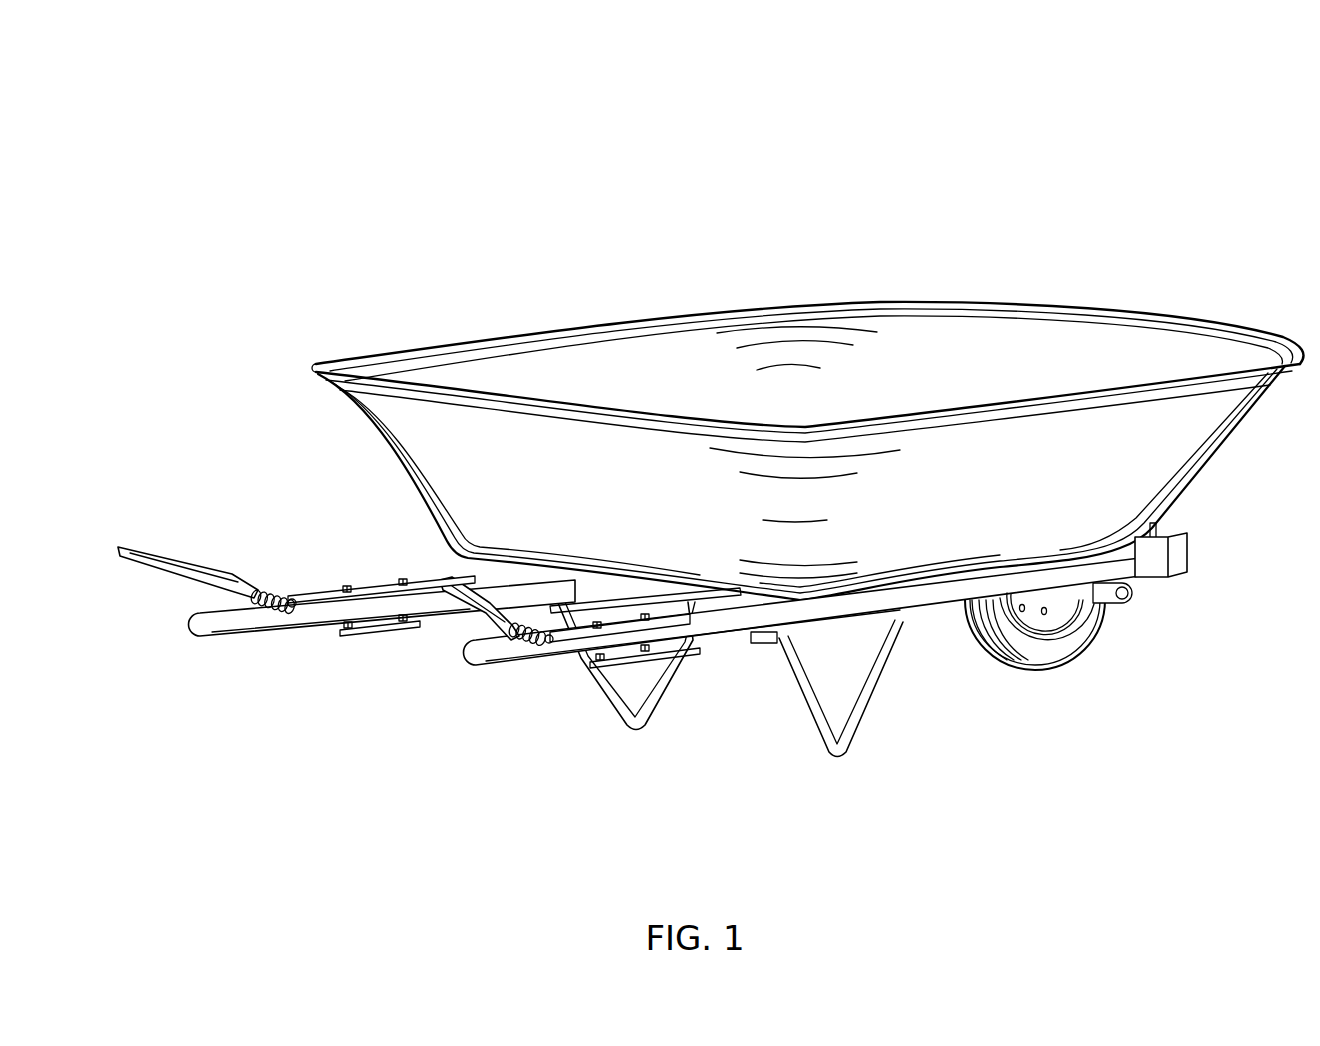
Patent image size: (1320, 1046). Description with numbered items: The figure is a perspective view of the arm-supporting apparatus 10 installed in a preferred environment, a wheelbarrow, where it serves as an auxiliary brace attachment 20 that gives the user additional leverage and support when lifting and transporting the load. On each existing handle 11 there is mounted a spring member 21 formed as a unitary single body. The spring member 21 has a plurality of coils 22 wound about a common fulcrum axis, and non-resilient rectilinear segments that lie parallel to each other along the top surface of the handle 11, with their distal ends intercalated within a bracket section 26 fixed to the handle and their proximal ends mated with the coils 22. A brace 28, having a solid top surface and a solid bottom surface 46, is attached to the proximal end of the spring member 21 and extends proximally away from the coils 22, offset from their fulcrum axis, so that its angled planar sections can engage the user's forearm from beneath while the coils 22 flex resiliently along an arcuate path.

The arm-supporting apparatus 10 is at (276, 190).
The existing handle 11 is at (242, 627).
The auxiliary brace attachment 20 is at (247, 465).
The spring member 21 is at (270, 582).
The coils 22 is at (292, 590).
The bracket section 26 is at (354, 575).
The brace 28 is at (184, 551).
The bottom surface 46 is at (168, 573).